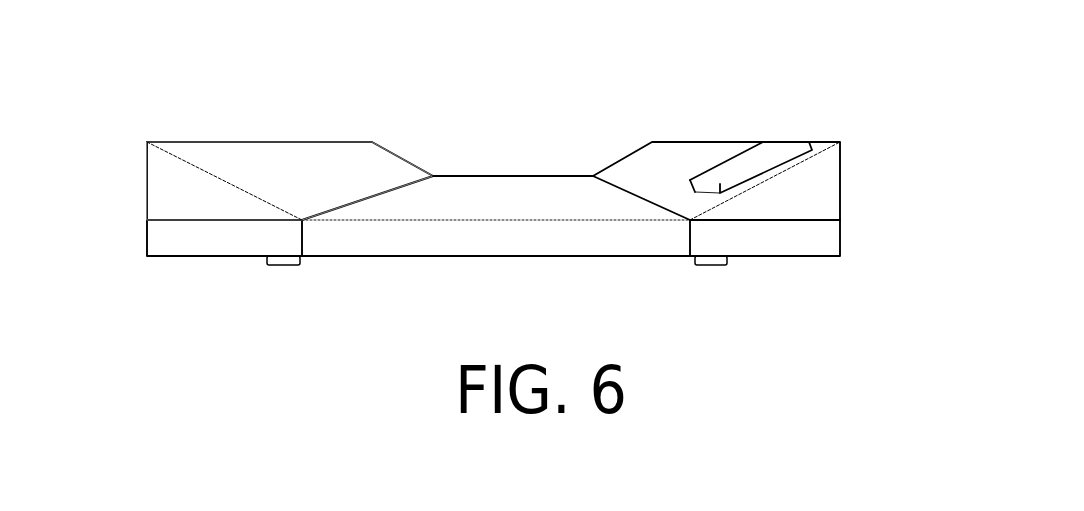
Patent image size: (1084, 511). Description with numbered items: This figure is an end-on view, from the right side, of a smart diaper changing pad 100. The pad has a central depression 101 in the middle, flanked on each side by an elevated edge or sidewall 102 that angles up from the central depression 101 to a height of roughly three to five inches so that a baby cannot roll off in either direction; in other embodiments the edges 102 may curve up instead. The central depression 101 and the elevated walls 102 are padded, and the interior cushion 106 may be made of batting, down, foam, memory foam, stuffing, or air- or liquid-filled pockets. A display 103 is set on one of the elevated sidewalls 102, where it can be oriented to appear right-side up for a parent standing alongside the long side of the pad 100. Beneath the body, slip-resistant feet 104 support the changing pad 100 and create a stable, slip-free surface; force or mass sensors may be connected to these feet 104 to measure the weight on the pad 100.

The smart diaper changing pad 100 is at (205, 302).
The central depression 101 is at (511, 201).
The elevated edges or sidewalls 102 is at (263, 161).
The display 103 is at (755, 157).
The slip-resistant feet 104 is at (287, 261).
The interior cushion 106 is at (413, 238).